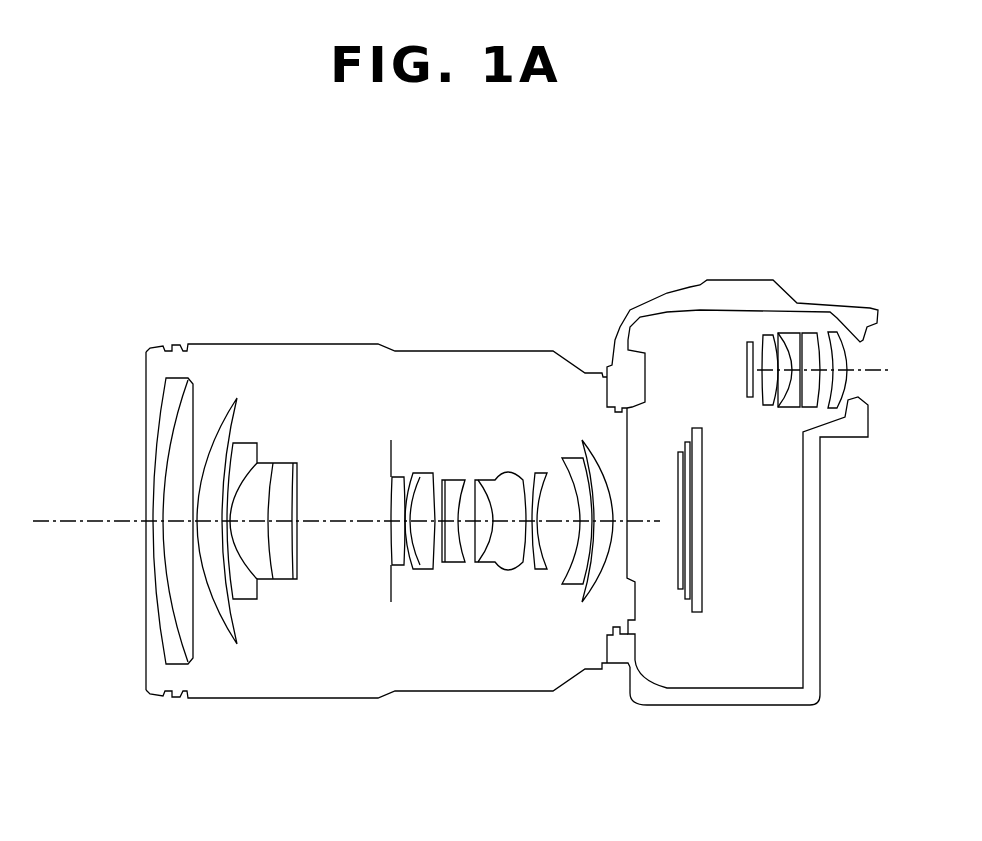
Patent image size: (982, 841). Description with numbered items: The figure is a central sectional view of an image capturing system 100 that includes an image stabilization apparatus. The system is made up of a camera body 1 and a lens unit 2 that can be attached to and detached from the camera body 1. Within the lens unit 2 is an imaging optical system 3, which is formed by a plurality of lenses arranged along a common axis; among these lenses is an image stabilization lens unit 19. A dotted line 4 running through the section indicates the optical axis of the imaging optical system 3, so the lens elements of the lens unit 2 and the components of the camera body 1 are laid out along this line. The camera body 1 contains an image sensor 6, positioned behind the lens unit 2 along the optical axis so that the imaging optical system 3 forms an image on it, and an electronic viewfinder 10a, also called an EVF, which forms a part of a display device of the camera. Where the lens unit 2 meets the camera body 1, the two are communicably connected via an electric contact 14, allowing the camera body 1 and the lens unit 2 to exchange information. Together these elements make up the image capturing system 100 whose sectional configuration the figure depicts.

The image capturing system 100 is at (605, 256).
The camera body 1 is at (787, 294).
The lens unit 2 is at (299, 343).
The imaging optical system 3 is at (257, 657).
The dotted line 4 is at (72, 524).
The image sensor 6 is at (702, 580).
The electronic viewfinder 10a is at (748, 398).
The electric contact 14 is at (610, 660).
The image stabilization lens unit 19 is at (452, 565).